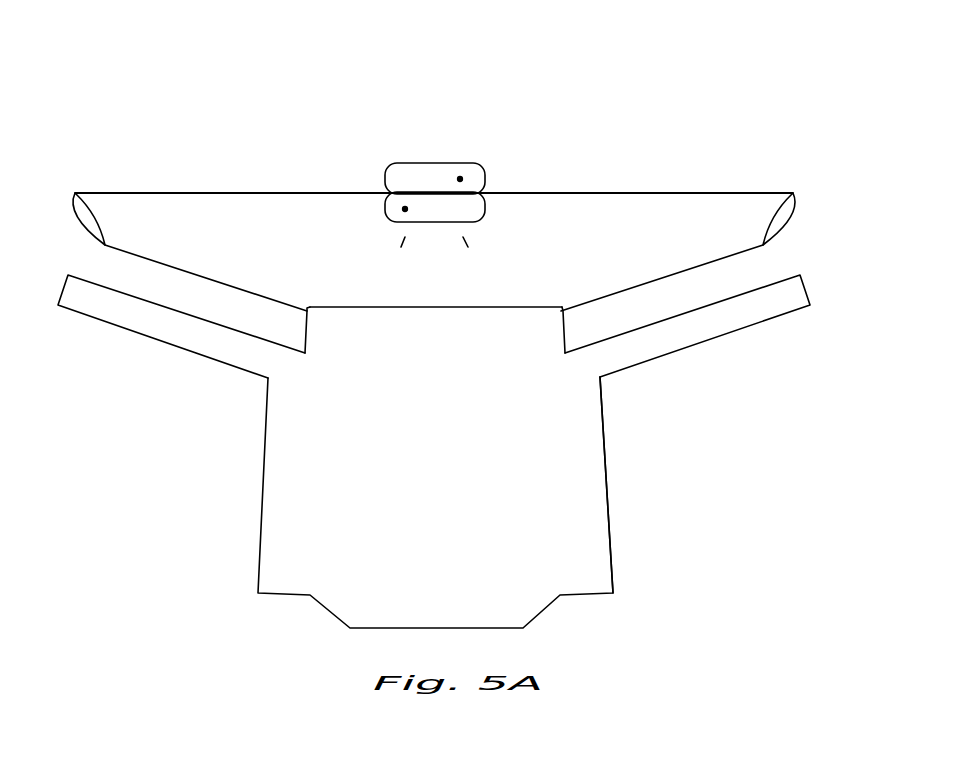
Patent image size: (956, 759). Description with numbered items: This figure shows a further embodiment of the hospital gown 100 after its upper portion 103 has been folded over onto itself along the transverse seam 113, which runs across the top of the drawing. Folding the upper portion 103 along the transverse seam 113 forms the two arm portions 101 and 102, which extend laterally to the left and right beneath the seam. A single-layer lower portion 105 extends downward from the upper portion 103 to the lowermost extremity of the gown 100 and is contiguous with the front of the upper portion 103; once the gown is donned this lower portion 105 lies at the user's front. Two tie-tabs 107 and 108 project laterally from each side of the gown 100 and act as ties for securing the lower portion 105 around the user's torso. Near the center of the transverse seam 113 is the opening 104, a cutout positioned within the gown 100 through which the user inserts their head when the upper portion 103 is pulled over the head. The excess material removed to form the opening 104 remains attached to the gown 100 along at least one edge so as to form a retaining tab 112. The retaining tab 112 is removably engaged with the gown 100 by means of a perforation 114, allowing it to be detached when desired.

The gown 100 is at (434, 333).
The arm portion 101 is at (193, 252).
The arm portion 102 is at (667, 256).
The upper portion 103 is at (434, 204).
The opening 104 is at (404, 206).
The lower portion 105 is at (605, 490).
The tie-tab 107 is at (115, 302).
The tie-tab 108 is at (687, 338).
The retaining tab 112 is at (502, 137).
The transverse seam 113 is at (273, 193).
The perforation 114 is at (465, 116).